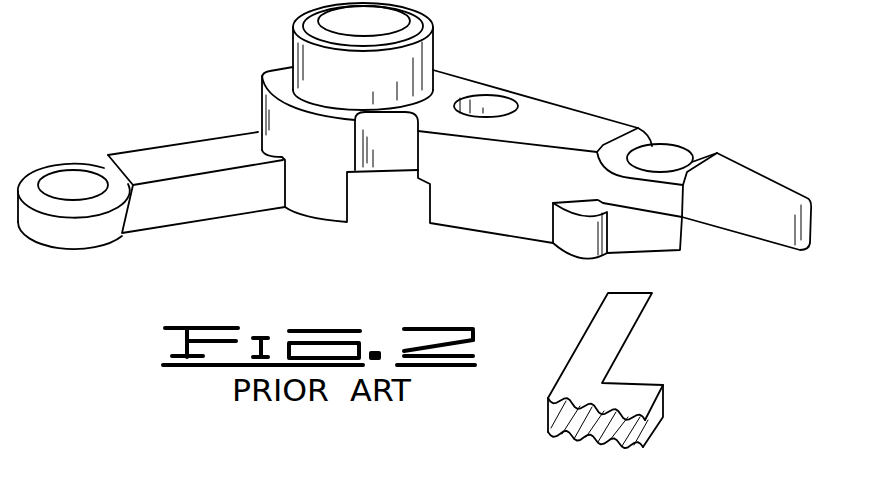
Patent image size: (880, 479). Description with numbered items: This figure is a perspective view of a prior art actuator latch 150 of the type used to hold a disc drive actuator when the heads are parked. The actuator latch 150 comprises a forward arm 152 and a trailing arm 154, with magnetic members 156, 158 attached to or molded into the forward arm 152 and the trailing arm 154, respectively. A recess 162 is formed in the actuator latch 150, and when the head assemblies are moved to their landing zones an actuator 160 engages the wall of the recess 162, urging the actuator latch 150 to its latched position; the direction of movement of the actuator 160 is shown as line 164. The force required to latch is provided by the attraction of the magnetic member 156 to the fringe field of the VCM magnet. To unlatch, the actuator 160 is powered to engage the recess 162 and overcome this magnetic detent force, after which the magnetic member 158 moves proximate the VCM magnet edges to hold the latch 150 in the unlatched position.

The actuator latch 150 is at (210, 85).
The forward arm 152 is at (93, 232).
The trailing arm 154 is at (737, 203).
The magnetic member 156 is at (65, 182).
The magnetic member 158 is at (662, 152).
The actuator 160 is at (608, 352).
The recess 162 is at (393, 148).
The line 164 is at (560, 317).